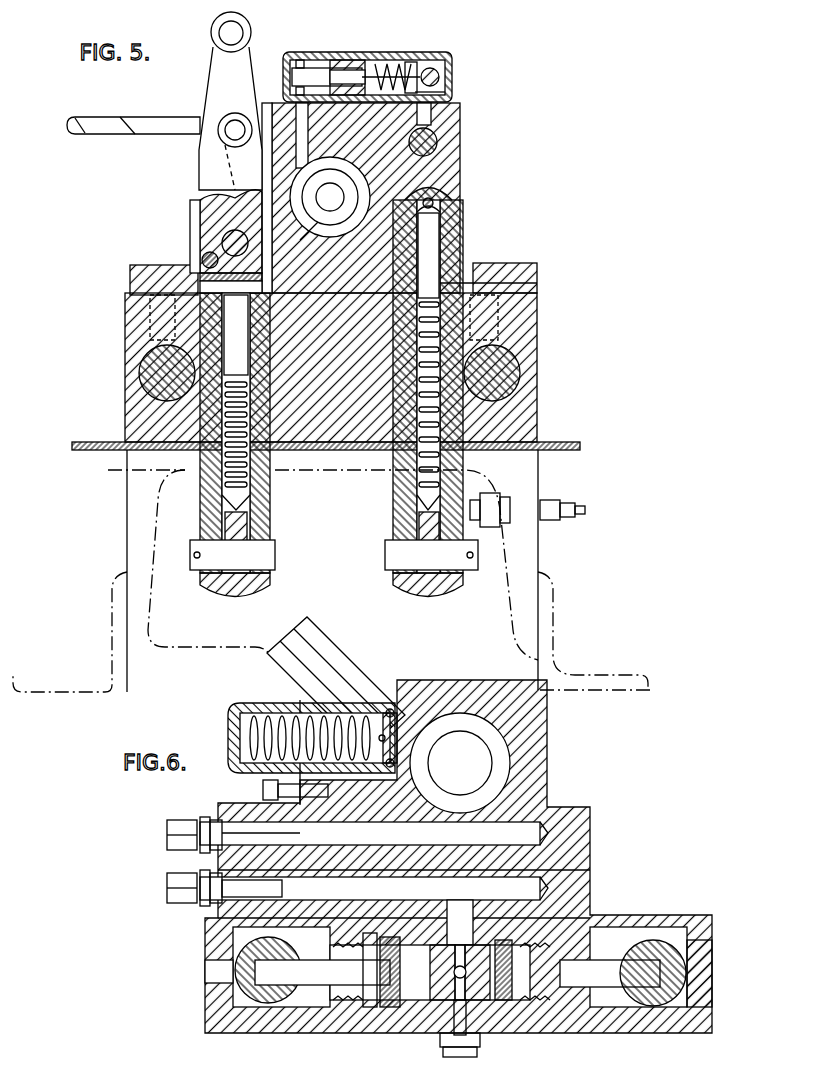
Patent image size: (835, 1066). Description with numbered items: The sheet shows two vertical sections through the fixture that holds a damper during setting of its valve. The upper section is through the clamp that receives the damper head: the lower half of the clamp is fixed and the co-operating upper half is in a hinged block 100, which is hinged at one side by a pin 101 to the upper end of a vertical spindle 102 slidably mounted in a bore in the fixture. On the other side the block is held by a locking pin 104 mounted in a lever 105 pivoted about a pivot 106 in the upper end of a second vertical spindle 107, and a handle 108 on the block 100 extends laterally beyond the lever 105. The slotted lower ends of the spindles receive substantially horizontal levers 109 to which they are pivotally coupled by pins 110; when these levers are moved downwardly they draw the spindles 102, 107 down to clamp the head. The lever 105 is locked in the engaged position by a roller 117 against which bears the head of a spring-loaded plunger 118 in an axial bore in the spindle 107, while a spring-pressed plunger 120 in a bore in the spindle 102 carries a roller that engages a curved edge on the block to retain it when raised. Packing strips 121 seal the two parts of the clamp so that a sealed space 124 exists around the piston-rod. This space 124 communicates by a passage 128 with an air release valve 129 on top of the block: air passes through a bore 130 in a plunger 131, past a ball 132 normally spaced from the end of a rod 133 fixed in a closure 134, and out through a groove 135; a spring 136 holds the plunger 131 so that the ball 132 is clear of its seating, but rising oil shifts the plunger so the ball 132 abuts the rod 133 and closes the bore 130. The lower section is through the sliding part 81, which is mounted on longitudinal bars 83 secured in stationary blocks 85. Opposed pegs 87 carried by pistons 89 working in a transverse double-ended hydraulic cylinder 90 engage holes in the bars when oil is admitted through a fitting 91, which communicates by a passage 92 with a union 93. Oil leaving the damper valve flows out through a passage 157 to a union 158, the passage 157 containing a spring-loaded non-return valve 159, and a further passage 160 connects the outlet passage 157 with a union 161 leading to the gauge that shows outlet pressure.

In FIG. 6, the part of the fixture 81 is at (582, 873).
In FIG. 6, the longitudinal bars 83 is at (640, 950).
In FIG. 6, the stationary blocks 85 is at (272, 1000).
In FIG. 6, the pegs 87 is at (326, 972).
In FIG. 6, the pistons 89 is at (372, 1002).
In FIG. 6, the hydraulic cylinder 90 is at (505, 1000).
In FIG. 6, the fitting 91 is at (483, 995).
In FIG. 6, the passage 92 is at (292, 893).
In FIG. 6, the union 93 is at (180, 890).
In FIG. 5, the hinged block 100 is at (438, 136).
In FIG. 5, the pin 101 is at (432, 148).
In FIG. 5, the vertical spindle 102 is at (445, 288).
In FIG. 5, the locking pin 104 is at (222, 136).
In FIG. 5, the lever 105 is at (228, 78).
In FIG. 5, the pivot 106 is at (232, 241).
In FIG. 5, the second vertical spindle 107 is at (200, 478).
In FIG. 5, the handle 108 is at (74, 136).
In FIG. 5, the levers 109 is at (236, 588).
In FIG. 5, the pins 110 is at (405, 556).
In FIG. 5, the roller 117 is at (204, 262).
In FIG. 5, the spring-loaded plunger 118 is at (232, 322).
In FIG. 5, the spring-pressed plunger 120 is at (430, 234).
In FIG. 5, the packing strips 121 is at (362, 242).
In FIG. 5, the sealed space 124 is at (352, 183).
In FIG. 5, the passage 128 is at (296, 152).
In FIG. 5, the air release valve 129 is at (452, 104).
In FIG. 5, the bore 130 is at (305, 74).
In FIG. 5, the plunger 131 is at (330, 60).
In FIG. 5, the ball 132 is at (372, 62).
In FIG. 5, the rod 133 is at (437, 58).
In FIG. 5, the closure 134 is at (452, 63).
In FIG. 5, the groove 135 is at (452, 92).
In FIG. 5, the spring 136 is at (410, 62).
In FIG. 6, the outlet passage 157 is at (420, 726).
In FIG. 6, the union 158 is at (298, 650).
In FIG. 6, the non-return valve 159 is at (397, 712).
In FIG. 6, the passage 160 is at (430, 838).
In FIG. 6, the union 161 is at (167, 832).